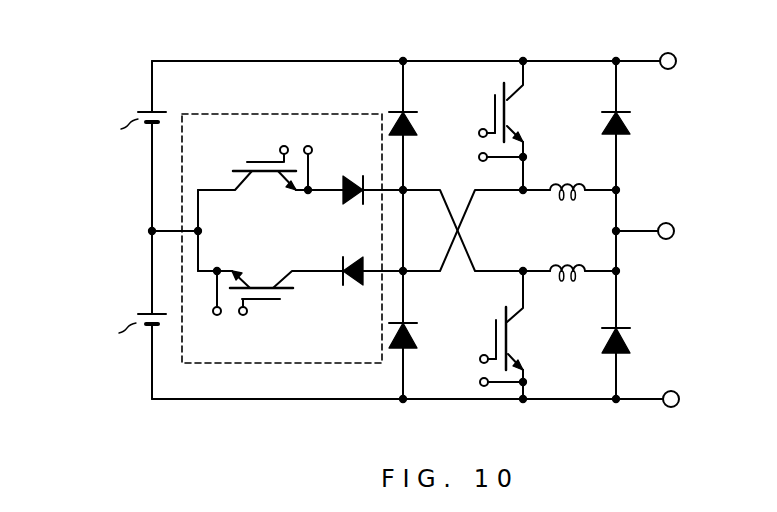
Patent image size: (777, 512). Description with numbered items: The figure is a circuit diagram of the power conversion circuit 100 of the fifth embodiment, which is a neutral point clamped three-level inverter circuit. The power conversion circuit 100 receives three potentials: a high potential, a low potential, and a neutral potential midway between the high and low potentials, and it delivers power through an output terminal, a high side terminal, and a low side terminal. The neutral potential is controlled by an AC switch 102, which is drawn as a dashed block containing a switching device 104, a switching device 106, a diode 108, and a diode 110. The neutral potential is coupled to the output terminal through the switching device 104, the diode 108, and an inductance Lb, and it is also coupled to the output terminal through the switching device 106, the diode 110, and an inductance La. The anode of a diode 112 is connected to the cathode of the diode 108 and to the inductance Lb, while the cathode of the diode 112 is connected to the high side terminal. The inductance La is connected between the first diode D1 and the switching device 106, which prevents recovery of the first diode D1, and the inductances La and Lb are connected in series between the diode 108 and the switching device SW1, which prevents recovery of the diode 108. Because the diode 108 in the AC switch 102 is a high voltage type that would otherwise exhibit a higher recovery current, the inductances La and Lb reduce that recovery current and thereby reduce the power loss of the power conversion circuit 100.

The power conversion circuit 100 is at (68, 76).
The AC switch 102 is at (291, 113).
The switching device 104 is at (248, 160).
The switching device 106 is at (268, 311).
The diode 108 is at (348, 165).
The diode 110 is at (353, 286).
The diode 112 is at (417, 124).
The switching device SW1 is at (520, 124).
The first diode D1 is at (628, 124).
The inductance La is at (559, 176).
The inductance Lb is at (553, 258).